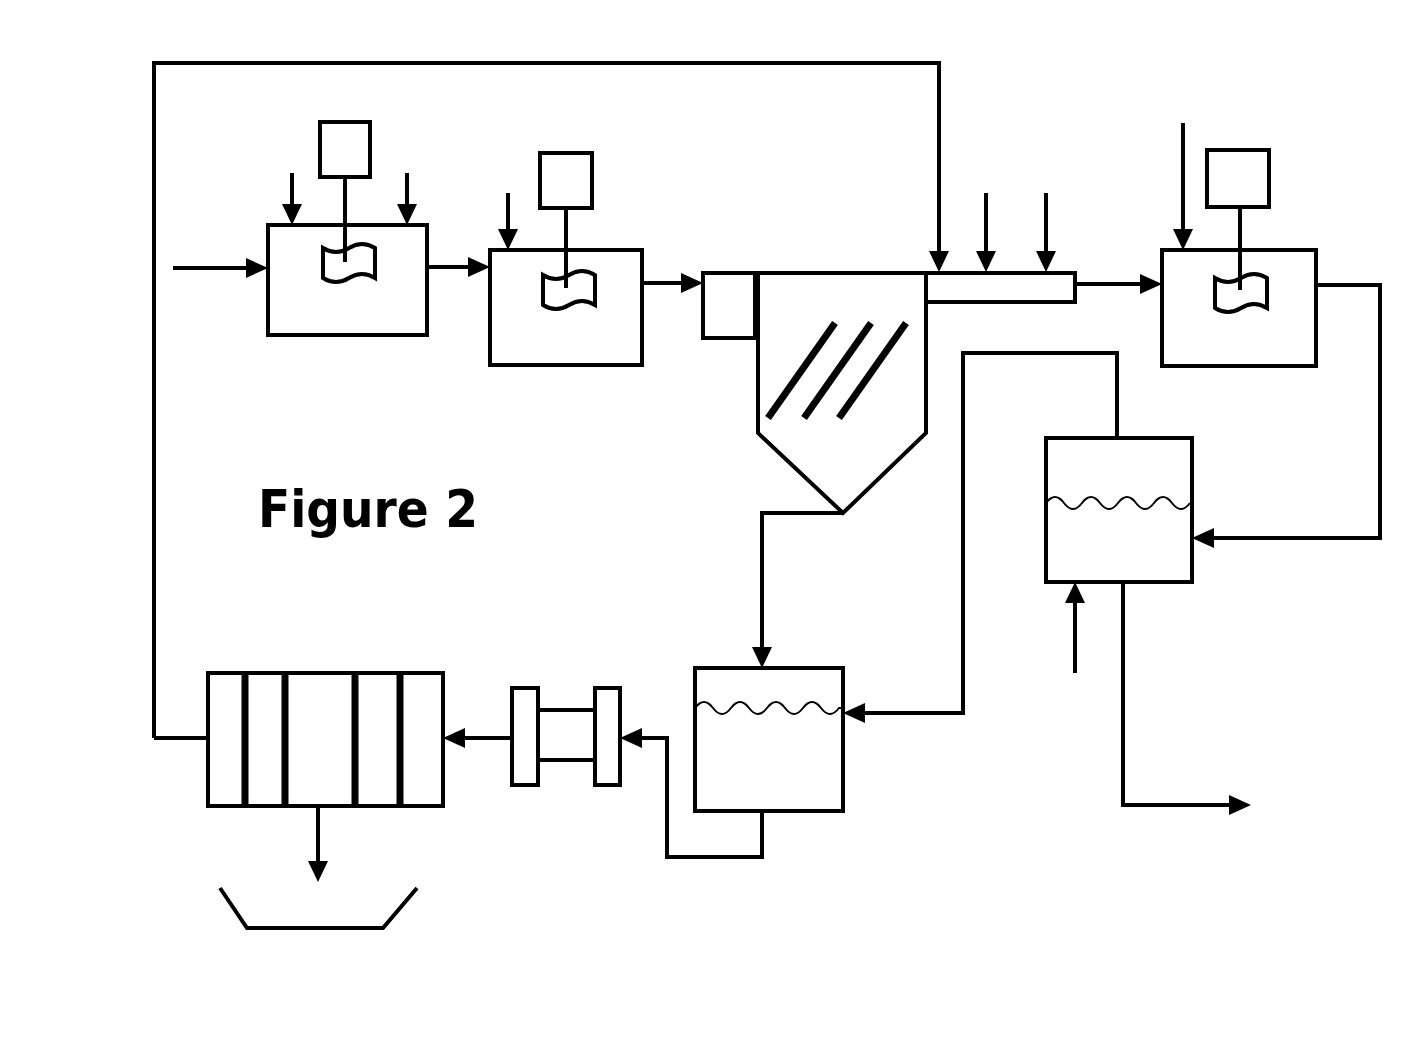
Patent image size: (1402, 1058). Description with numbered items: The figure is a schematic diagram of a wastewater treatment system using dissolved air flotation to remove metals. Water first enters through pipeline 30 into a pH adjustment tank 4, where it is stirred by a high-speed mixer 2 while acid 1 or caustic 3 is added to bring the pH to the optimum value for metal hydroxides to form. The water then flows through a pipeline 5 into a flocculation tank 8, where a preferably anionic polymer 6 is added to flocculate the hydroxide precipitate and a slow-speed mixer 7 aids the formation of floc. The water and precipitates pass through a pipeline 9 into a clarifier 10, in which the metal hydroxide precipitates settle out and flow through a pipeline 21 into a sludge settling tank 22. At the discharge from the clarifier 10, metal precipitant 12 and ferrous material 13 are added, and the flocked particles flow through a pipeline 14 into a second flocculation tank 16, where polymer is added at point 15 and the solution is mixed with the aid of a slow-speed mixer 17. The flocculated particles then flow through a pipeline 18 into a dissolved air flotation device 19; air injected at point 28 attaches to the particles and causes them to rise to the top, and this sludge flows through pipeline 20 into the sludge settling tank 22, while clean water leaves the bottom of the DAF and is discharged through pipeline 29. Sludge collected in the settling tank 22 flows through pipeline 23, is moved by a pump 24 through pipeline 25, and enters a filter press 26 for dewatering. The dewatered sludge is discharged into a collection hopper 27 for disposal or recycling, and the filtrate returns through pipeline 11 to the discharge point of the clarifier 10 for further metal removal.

The acid 1 is at (292, 183).
The high-speed mixer 2 is at (345, 192).
The caustic 3 is at (407, 183).
The pH adjustment tank 4 is at (347, 280).
The pipeline 5 is at (446, 285).
The polymer 6 is at (508, 201).
The slow-speed mixer 7 is at (566, 220).
The flocculation tank 8 is at (566, 307).
The pipeline 9 is at (668, 262).
The clarifier 10 is at (814, 393).
The pipeline 11 is at (780, 78).
The metal precipitant 12 is at (986, 215).
The ferrous material 13 is at (1046, 215).
The pipeline 14 is at (1116, 258).
The polymer addition point 15 is at (1183, 166).
The flocculation tank 16 is at (1239, 308).
The slow-speed mixer 17 is at (1238, 220).
The pipeline 18 is at (1244, 560).
The dissolved air flotation device 19 is at (1119, 510).
The pipeline 20 is at (945, 541).
The pipeline 21 is at (752, 556).
The sludge settling tank 22 is at (769, 739).
The pipeline 23 is at (653, 811).
The pump 24 is at (566, 736).
The pipeline 25 is at (486, 717).
The filter press 26 is at (298, 739).
The hopper 27 is at (362, 898).
The air injection point 28 is at (1072, 652).
The pipeline 29 is at (1183, 828).
The pipeline 30 is at (203, 296).